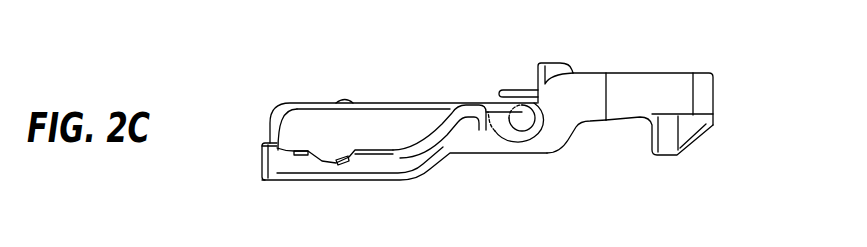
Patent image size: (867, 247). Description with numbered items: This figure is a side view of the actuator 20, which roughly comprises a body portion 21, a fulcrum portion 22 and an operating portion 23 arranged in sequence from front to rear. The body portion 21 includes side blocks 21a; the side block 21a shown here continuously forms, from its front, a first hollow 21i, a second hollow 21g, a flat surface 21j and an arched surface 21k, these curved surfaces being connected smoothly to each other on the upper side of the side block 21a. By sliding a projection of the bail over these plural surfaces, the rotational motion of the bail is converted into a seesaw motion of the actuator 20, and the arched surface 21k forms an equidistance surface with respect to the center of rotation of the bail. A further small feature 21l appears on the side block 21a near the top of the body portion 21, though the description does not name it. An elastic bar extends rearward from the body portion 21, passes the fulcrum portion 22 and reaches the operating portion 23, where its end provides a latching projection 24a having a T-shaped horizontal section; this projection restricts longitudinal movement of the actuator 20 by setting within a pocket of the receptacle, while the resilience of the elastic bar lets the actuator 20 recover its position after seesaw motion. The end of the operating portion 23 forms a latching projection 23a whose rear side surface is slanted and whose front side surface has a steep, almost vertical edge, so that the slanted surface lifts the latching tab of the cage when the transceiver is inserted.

The actuator 20 is at (713, 57).
The body portion 21 is at (382, 138).
The side block 21a is at (278, 165).
The second hollow 21g is at (328, 156).
The first hollow 21i is at (295, 151).
The flat surface 21j is at (377, 147).
The arched surface 21k is at (441, 126).
The projection 21l is at (343, 93).
The fulcrum portion 22 is at (535, 184).
The operating portion 23 is at (639, 144).
The latching projection 23a is at (696, 144).
The latching projection 24a is at (566, 68).